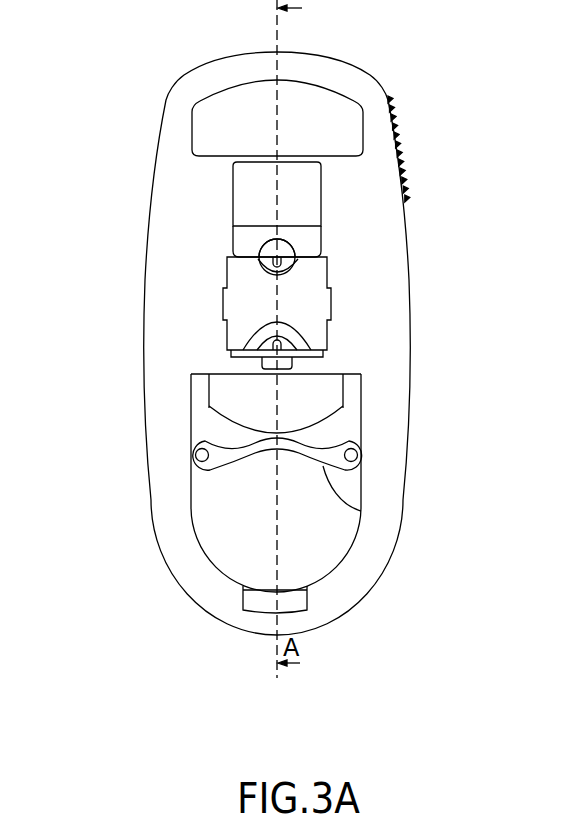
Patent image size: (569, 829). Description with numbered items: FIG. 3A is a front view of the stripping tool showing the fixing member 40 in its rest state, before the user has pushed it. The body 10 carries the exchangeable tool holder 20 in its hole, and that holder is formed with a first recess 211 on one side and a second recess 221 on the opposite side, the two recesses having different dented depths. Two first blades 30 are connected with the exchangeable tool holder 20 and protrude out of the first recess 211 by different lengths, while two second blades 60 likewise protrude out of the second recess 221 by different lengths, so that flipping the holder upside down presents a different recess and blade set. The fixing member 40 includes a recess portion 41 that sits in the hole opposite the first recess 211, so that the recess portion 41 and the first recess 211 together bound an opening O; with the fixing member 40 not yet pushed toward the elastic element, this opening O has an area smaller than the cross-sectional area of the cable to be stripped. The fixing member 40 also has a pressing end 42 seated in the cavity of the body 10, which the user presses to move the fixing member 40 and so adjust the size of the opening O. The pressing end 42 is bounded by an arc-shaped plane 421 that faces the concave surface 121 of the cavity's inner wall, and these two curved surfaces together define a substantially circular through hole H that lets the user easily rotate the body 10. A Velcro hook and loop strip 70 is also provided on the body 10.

The body 10 is at (150, 328).
The Velcro hook and loop strip 70 is at (398, 133).
The through hole H is at (200, 542).
The recess portion 41 is at (310, 237).
The exchangeable tool holder 20 is at (320, 296).
The first blades 30 is at (257, 253).
The first recess 211 is at (260, 262).
The opening O is at (292, 250).
The second blades 60 is at (262, 346).
The second recess 221 is at (310, 337).
The fixing member 40 is at (355, 400).
The pressing end 42 is at (197, 462).
The arc-shaped plane 421 is at (361, 511).
The concave surface 121 is at (285, 598).